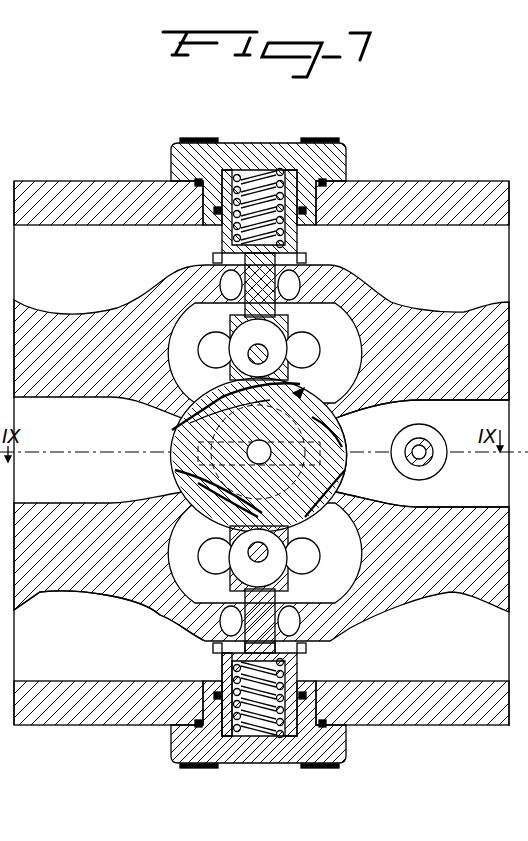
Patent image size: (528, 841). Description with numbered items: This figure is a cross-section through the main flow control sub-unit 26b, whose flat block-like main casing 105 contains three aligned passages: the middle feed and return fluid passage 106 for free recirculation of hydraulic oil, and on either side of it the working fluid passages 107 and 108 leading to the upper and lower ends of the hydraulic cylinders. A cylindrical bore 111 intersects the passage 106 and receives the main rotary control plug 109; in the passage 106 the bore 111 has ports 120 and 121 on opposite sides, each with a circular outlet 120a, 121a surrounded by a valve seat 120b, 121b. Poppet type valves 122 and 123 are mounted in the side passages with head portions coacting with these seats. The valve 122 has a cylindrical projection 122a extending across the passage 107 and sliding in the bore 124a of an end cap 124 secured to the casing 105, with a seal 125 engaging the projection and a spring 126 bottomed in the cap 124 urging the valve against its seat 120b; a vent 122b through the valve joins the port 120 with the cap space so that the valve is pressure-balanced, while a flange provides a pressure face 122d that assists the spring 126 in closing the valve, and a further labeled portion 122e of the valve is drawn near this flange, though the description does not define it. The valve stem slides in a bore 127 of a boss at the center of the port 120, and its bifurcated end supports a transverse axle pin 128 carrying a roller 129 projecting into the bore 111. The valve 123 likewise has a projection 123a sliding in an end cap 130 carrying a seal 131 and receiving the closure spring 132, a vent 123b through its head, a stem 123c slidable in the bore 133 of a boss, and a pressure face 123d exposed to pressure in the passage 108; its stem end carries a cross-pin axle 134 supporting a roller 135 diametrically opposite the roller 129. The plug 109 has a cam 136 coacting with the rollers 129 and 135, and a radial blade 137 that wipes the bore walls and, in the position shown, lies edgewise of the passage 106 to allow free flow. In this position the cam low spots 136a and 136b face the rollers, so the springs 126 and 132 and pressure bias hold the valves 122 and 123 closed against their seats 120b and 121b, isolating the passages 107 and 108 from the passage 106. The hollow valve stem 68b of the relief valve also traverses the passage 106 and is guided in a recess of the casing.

The main flow control sub-unit 26b is at (416, 178).
The valve stem 68b is at (426, 446).
The main casing 105 is at (466, 205).
The middle feed and return fluid passage 106 is at (495, 477).
The working fluid passage 107 is at (490, 672).
The working fluid passage 108 is at (470, 282).
The main rotary control plug 109 is at (165, 446).
The cylindrical bore 111 is at (343, 357).
The port 120 is at (348, 588).
The circular outlet 120a is at (302, 648).
The valve seat 120b is at (212, 640).
The port 121 is at (340, 333).
The circular outlet 121a is at (282, 292).
The valve seat 121b is at (215, 262).
The poppet type valve 122 is at (254, 616).
The cylindrical projection 122a is at (297, 668).
The vent 122b is at (330, 608).
The pressure face 122d is at (222, 648).
The stem flange 122e is at (217, 628).
The poppet type valve 123 is at (226, 338).
The projection 123a is at (300, 243).
The vent 123b is at (234, 306).
The stem 123c is at (336, 290).
The pressure face 123d is at (222, 250).
The end cap 124 is at (195, 748).
The bore 124a is at (238, 735).
The seal 125 is at (210, 698).
The spring 126 is at (280, 740).
The bore 127 is at (286, 562).
The transverse axle pin 128 is at (250, 551).
The roller 129 is at (232, 527).
The end cap 130 is at (274, 152).
The seal 131 is at (306, 210).
The closure spring 132 is at (246, 188).
The bore 133 is at (234, 354).
The cross-pin axle 134 is at (268, 357).
The roller 135 is at (270, 343).
The cam 136 is at (385, 443).
The low spot 136a is at (196, 462).
The low spot 136b is at (176, 425).
The radial blade 137 is at (382, 472).